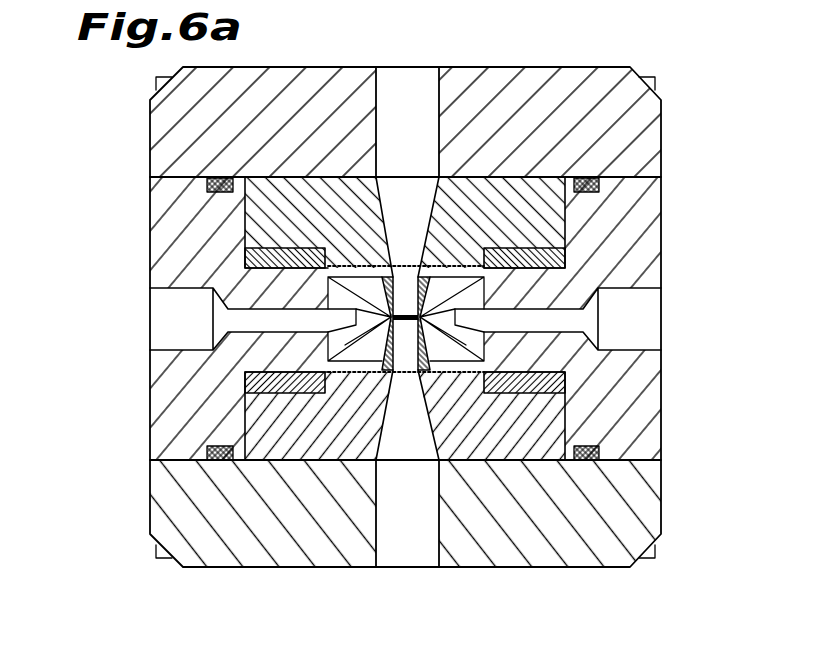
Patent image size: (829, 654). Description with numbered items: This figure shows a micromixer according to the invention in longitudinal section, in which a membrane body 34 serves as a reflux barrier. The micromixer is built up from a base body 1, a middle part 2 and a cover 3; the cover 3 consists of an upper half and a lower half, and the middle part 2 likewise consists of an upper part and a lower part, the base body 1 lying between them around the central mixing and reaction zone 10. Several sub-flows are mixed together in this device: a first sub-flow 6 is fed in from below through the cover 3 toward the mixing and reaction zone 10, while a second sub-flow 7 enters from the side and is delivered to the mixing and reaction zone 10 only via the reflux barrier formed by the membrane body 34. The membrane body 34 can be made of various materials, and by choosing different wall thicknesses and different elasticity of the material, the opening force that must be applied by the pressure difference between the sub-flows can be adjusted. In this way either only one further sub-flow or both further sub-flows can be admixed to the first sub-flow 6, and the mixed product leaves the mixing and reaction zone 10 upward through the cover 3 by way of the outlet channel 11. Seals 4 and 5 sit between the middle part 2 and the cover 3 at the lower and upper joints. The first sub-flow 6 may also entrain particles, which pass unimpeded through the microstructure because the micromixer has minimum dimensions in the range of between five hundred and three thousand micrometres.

The base body 1 is at (600, 373).
The middle part 2 is at (530, 207).
The cover 3 is at (600, 117).
The seal 4 is at (212, 455).
The seal 5 is at (600, 184).
The first sub-flow 6 is at (405, 520).
The second sub-flow 7 is at (613, 318).
The mixing and reaction zone 10 is at (407, 300).
The outlet channel 11 is at (407, 107).
The membrane body 34 is at (565, 262).